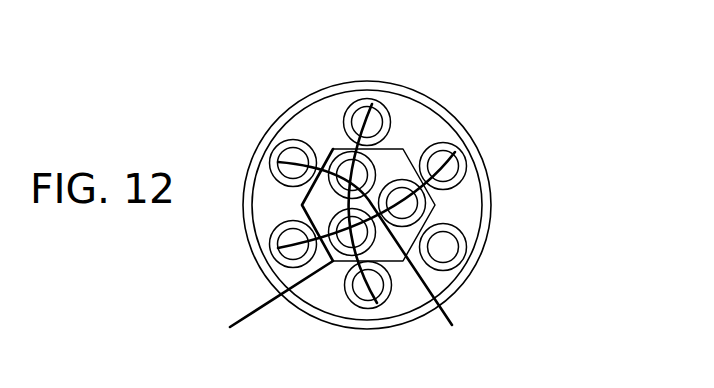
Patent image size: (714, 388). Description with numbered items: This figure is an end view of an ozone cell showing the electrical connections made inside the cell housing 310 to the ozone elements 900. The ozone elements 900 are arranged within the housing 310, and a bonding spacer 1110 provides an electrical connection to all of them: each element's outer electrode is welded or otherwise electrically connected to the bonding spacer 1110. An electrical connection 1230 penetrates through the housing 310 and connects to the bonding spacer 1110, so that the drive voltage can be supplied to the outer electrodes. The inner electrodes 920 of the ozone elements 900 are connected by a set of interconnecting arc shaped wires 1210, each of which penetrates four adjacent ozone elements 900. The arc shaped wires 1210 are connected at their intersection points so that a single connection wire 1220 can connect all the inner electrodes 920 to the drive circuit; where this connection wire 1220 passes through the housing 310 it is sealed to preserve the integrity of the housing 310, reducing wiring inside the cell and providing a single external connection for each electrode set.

The ozone cell housing 310 is at (388, 81).
The ozone element 900 is at (343, 118).
The inner electrode 920 is at (453, 167).
The bonding spacer 1110 is at (414, 207).
The arc shaped wire 1210 is at (366, 127).
The connection wire 1220 is at (453, 324).
The electrical connection 1230 is at (242, 315).